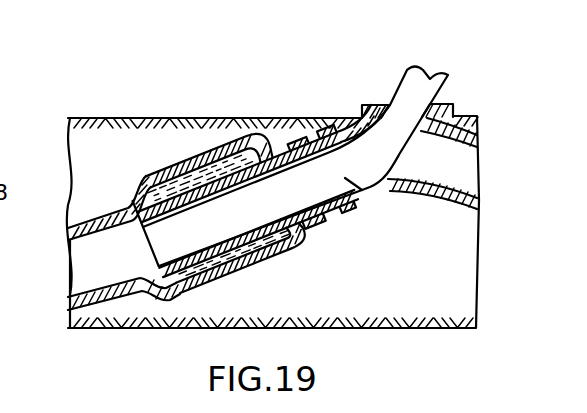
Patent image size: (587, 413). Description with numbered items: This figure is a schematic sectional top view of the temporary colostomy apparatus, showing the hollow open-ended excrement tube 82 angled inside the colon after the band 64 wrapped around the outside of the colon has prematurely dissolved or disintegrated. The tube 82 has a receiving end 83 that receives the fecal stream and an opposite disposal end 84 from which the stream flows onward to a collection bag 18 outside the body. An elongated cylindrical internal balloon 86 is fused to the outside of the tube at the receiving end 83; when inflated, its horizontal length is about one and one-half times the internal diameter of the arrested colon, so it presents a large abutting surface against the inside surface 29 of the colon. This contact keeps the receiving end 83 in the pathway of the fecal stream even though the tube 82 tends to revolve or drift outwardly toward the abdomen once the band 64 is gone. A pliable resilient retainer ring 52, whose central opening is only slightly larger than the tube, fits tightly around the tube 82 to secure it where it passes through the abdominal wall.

The colostomy bag 18 is at (93, 220).
The inside surface of the colon 29 is at (95, 245).
The receiving end 83 is at (150, 243).
The internal balloon 86 is at (214, 149).
The band 64 is at (303, 137).
The excrement tube 82 is at (373, 197).
The disposal end 84 is at (407, 88).
The retainer ring 52 is at (444, 103).